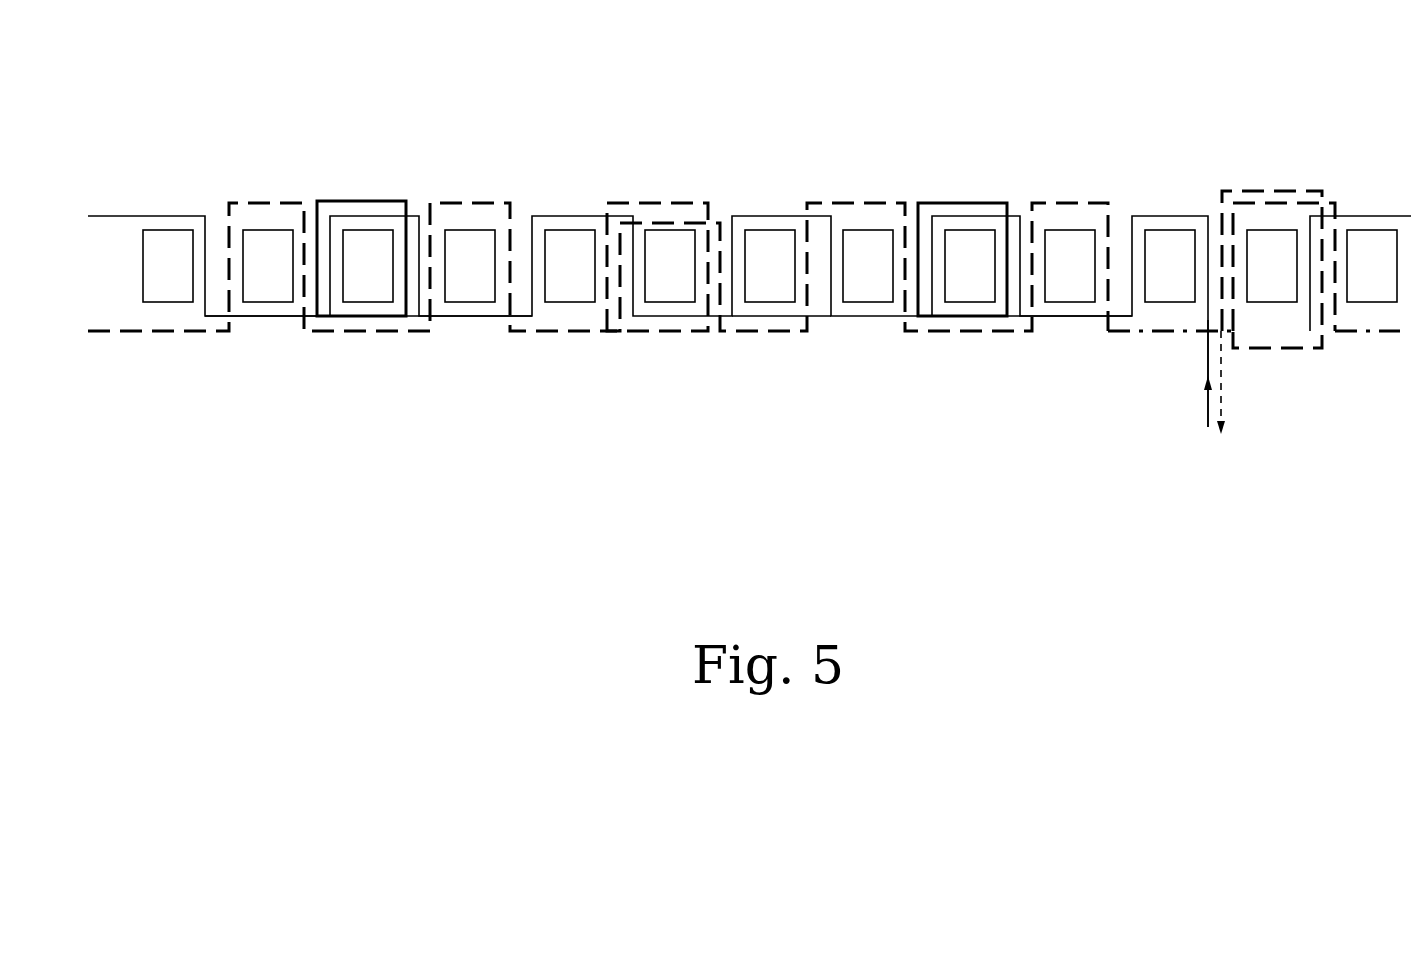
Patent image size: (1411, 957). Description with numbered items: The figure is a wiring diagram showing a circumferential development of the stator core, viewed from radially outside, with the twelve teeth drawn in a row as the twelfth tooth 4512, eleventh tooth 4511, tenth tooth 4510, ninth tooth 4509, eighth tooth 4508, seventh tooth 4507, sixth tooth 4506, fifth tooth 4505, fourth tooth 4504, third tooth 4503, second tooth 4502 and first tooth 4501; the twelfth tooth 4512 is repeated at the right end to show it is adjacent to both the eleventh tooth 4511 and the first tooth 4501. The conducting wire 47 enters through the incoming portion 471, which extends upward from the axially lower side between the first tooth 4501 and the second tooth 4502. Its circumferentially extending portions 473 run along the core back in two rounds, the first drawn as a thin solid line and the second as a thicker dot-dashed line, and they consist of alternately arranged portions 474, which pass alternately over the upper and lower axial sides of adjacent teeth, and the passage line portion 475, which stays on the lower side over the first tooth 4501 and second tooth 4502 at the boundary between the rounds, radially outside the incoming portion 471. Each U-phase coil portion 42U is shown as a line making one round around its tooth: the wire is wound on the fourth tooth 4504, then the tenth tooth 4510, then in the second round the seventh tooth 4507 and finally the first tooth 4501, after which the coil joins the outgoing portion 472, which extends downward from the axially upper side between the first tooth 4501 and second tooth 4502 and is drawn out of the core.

The twelfth tooth 4512 is at (170, 255).
The eleventh tooth 4511 is at (262, 245).
The tenth tooth 4510 is at (366, 250).
The ninth tooth 4509 is at (466, 252).
The eighth tooth 4508 is at (575, 262).
The seventh tooth 4507 is at (668, 252).
The sixth tooth 4506 is at (770, 265).
The fifth tooth 4505 is at (865, 262).
The fourth tooth 4504 is at (957, 252).
The third tooth 4503 is at (1068, 252).
The second tooth 4502 is at (1172, 258).
The first tooth 4501 is at (1267, 248).
The conducting wire 47 is at (749, 255).
The incoming portion 471 is at (1205, 404).
The outgoing portion 472 is at (1225, 404).
The circumferentially extending portions 473 is at (1108, 202).
The alternately arranged portions 474 is at (240, 318).
The passage line portion 475 is at (1145, 335).
The U-phase coil portion 42U is at (368, 318).